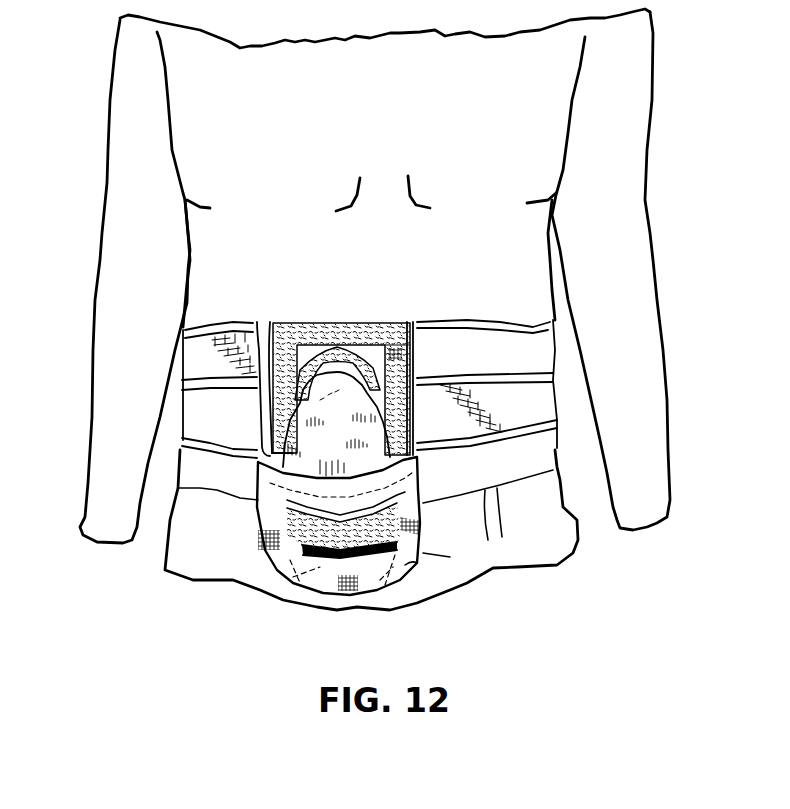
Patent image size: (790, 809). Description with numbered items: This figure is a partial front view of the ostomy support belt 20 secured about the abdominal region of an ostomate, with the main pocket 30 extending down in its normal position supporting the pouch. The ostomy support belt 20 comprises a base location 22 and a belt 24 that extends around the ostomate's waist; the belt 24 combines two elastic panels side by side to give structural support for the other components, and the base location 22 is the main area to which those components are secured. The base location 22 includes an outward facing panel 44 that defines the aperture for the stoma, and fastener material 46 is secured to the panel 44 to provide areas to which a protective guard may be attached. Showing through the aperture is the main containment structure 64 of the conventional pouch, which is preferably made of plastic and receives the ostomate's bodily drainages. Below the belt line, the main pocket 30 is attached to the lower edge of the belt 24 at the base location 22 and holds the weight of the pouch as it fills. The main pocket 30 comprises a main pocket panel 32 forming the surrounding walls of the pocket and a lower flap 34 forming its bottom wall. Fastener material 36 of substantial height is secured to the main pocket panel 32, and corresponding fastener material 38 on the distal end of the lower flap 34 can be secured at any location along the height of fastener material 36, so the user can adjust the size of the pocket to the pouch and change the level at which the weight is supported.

The ostomy support belt 20 is at (413, 293).
The base location 22 is at (428, 314).
The belt 24 is at (495, 362).
The main pocket 30 is at (258, 545).
The main pocket panel 32 is at (410, 548).
The lower flap 34 is at (318, 578).
The fastener material 36 is at (397, 508).
The fastener material 38 is at (357, 558).
The outward facing panel 44 is at (303, 357).
The fastener material 46 is at (329, 347).
The main containment structure 64 is at (338, 459).